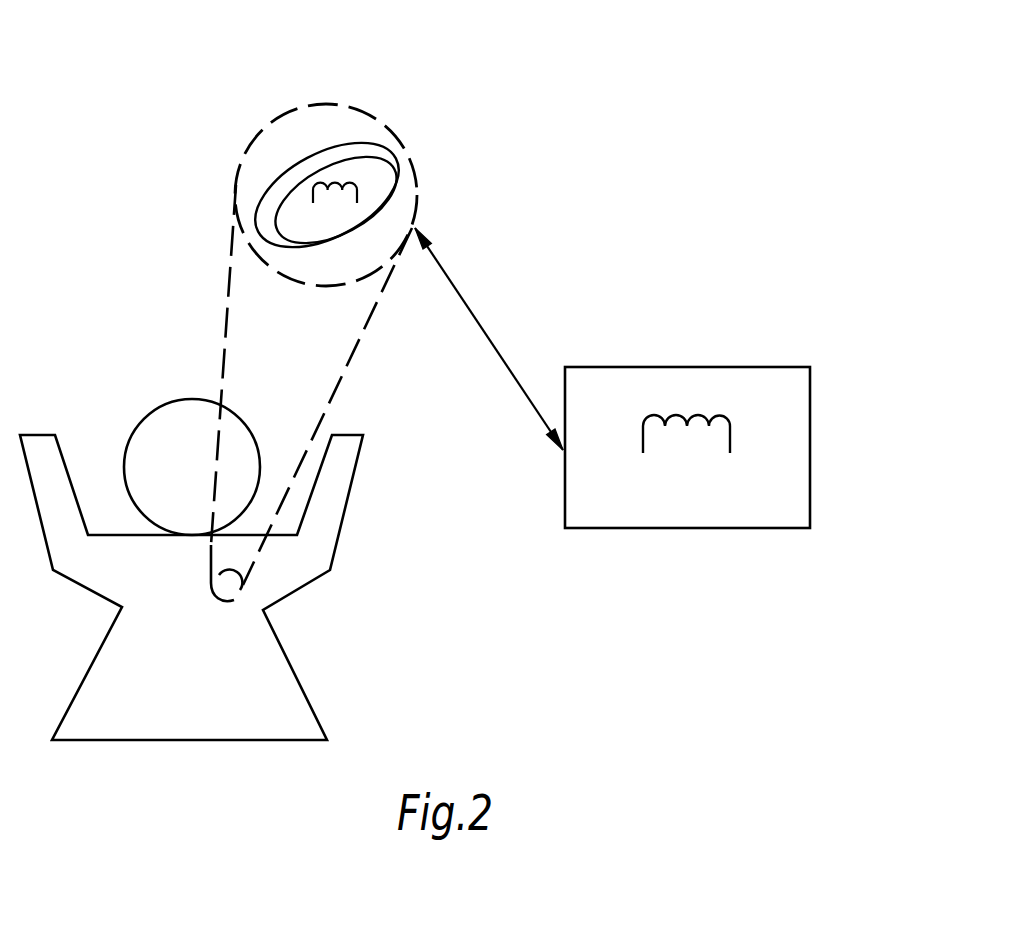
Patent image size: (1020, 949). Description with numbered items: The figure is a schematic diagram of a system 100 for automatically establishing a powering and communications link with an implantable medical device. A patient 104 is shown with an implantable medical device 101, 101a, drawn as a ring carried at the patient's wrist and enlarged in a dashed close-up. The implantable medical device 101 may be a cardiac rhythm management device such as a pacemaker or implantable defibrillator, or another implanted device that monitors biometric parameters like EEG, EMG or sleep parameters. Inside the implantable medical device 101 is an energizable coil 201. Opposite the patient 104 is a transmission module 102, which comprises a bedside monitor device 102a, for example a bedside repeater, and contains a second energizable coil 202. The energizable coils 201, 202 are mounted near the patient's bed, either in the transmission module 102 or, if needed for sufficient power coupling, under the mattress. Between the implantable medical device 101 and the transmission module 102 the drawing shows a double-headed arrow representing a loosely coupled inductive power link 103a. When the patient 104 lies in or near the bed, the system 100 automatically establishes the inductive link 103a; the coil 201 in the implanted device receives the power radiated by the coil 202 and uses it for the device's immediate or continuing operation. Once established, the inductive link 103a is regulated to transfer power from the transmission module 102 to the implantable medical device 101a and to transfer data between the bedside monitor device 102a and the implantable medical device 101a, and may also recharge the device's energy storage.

The system 100 is at (215, 75).
The implantable medical device 101 is at (272, 230).
The energizable coil 201 is at (357, 198).
The implantable medical device 101a is at (233, 588).
The patient 104 is at (297, 687).
The loosely coupled inductive power link 103a is at (486, 331).
The transmission module 102 is at (741, 416).
The bedside monitor device 102a is at (780, 367).
The energizable coil 202 is at (732, 438).